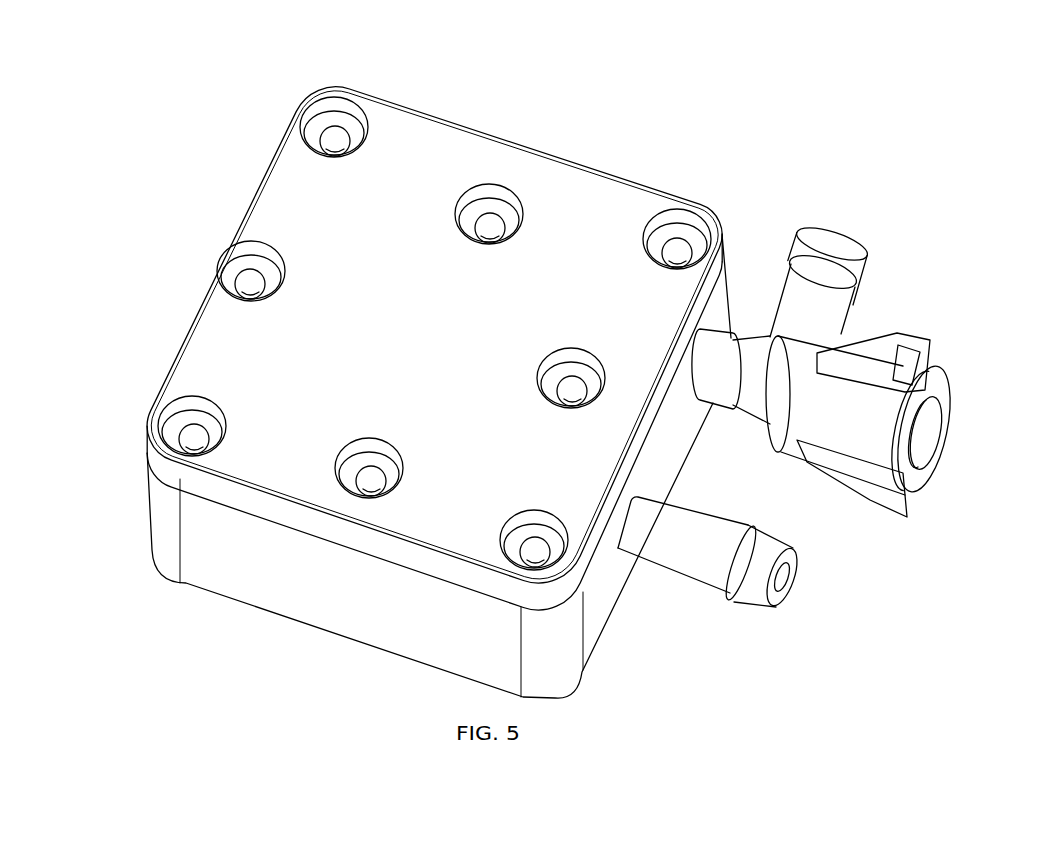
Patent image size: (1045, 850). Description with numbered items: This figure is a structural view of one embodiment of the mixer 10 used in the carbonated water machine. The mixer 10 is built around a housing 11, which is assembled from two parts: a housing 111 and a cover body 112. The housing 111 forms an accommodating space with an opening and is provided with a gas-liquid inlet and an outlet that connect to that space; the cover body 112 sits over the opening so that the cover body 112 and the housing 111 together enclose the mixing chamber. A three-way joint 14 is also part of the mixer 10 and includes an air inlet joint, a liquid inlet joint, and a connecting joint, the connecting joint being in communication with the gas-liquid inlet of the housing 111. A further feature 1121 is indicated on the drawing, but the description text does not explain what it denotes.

The mixer 10 is at (523, 39).
The housing 11 is at (66, 414).
The housing 111 is at (222, 523).
The cover body 112 is at (242, 358).
The outlet hole 1121 is at (790, 580).
The three-way joint 14 is at (758, 363).